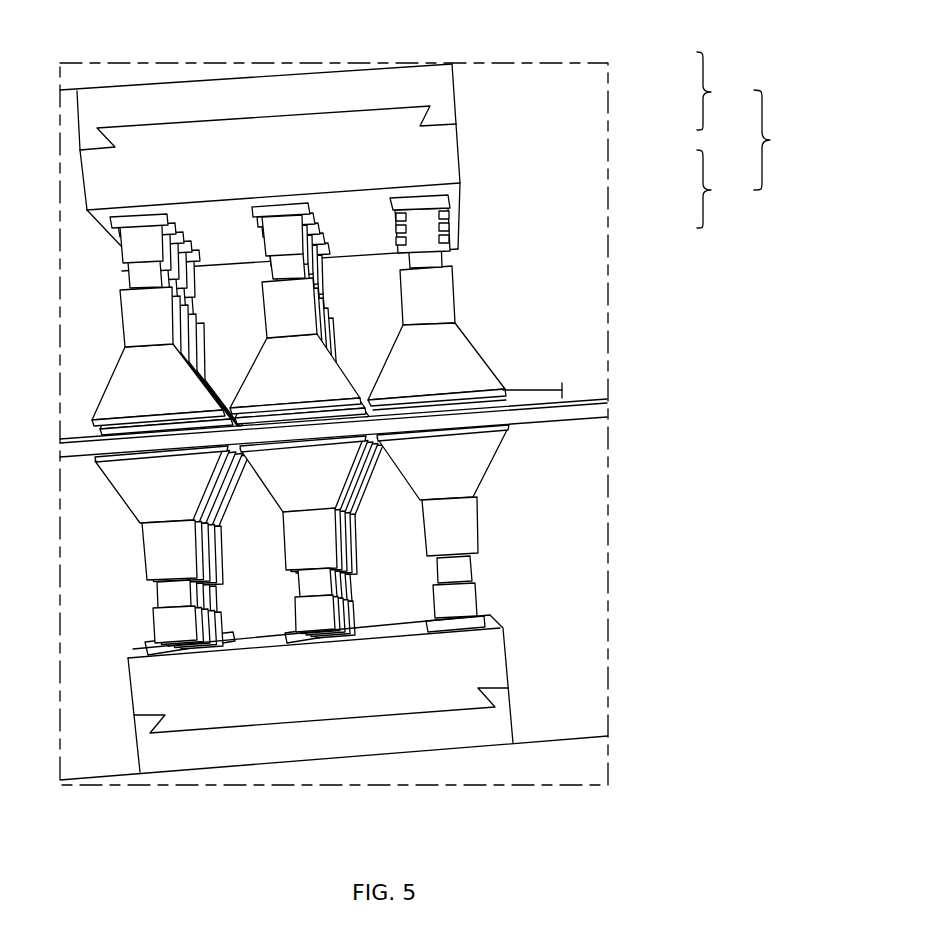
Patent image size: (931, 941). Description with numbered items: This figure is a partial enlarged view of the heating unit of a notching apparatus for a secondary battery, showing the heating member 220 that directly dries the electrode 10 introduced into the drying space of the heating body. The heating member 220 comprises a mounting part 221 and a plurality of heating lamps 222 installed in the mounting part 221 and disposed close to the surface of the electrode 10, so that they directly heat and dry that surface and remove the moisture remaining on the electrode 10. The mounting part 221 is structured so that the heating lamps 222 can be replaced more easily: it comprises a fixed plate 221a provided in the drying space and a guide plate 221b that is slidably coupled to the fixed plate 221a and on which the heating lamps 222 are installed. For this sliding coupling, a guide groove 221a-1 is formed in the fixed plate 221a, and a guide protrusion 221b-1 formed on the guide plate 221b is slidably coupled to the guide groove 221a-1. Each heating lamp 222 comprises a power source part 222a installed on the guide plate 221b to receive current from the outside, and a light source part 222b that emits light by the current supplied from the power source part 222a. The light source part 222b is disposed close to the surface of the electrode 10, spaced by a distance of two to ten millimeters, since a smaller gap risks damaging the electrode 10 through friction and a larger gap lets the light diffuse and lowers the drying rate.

The electrode 10 is at (593, 401).
The heating member 220 is at (784, 140).
The mounting part 221 is at (726, 91).
The fixed plate 221a is at (440, 87).
The guide plate 221b is at (447, 150).
The guide groove 221a-1 is at (247, 110).
The guide protrusion 221b-1 is at (398, 117).
The heating lamps 222 is at (726, 189).
The power source part 222a is at (442, 298).
The light source part 222b is at (467, 360).